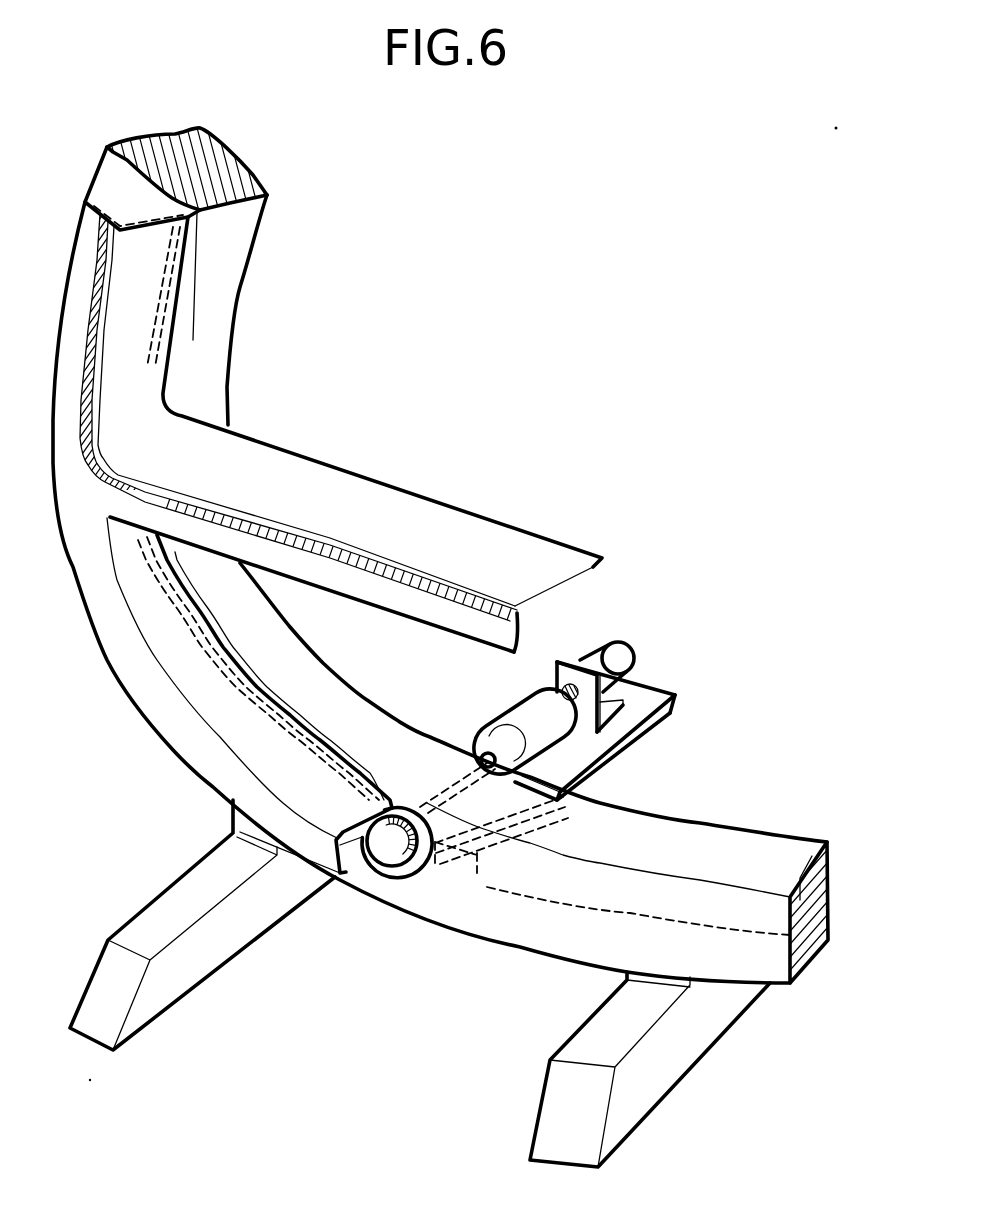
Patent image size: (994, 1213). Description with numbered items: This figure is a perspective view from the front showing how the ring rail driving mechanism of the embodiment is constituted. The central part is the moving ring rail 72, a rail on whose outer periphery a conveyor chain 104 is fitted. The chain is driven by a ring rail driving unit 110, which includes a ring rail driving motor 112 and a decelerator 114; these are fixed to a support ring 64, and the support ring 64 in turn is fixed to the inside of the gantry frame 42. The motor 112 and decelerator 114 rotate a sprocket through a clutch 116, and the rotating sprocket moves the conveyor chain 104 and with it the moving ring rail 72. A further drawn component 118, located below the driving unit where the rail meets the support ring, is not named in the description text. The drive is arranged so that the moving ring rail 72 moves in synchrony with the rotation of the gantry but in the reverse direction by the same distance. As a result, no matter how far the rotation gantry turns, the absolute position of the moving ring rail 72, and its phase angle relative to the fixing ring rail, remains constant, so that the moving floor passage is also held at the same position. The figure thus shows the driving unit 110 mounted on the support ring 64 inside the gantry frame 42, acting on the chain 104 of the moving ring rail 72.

The gantry frame 42 is at (197, 963).
The support ring 64 is at (717, 823).
The moving ring rail 72 is at (323, 460).
The conveyor chain 104 is at (247, 713).
The ring rail driving unit 110 is at (582, 662).
The ring rail driving motor 112 is at (635, 658).
The decelerator 114 is at (560, 730).
The clutch 116 is at (493, 743).
The lower guide roller 118 is at (393, 866).